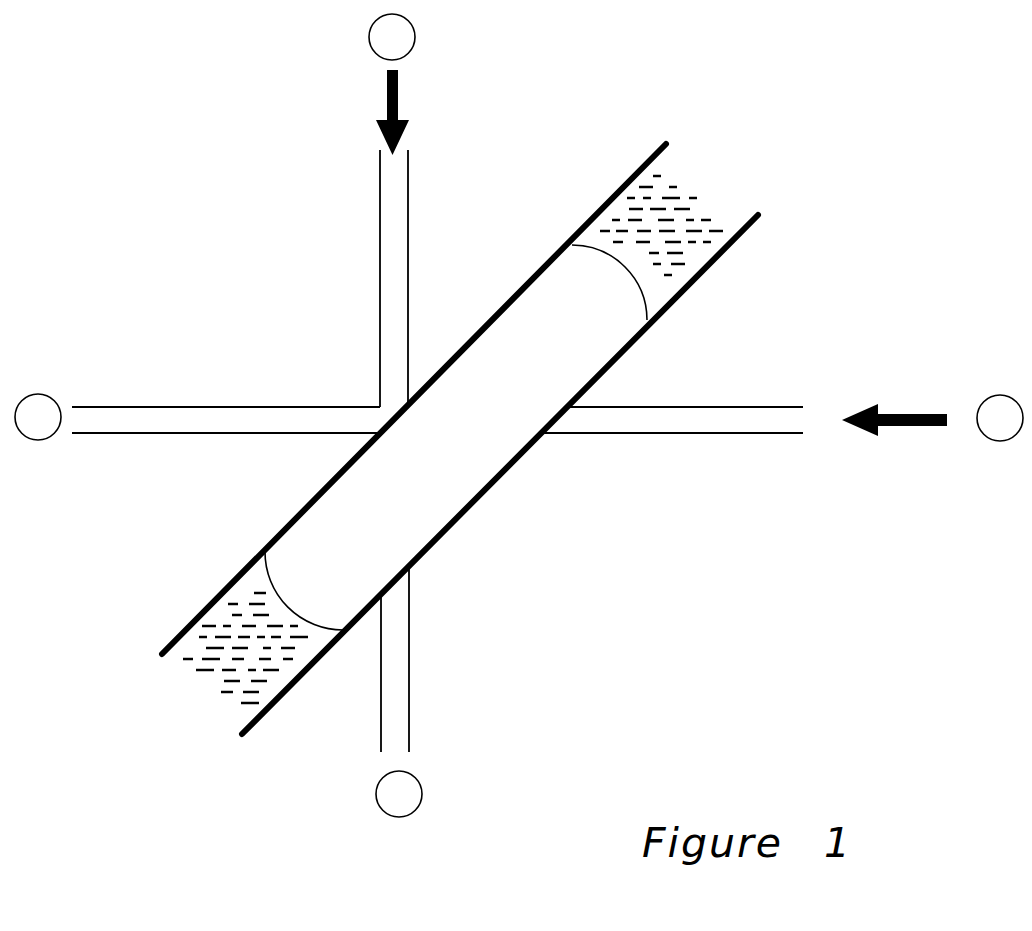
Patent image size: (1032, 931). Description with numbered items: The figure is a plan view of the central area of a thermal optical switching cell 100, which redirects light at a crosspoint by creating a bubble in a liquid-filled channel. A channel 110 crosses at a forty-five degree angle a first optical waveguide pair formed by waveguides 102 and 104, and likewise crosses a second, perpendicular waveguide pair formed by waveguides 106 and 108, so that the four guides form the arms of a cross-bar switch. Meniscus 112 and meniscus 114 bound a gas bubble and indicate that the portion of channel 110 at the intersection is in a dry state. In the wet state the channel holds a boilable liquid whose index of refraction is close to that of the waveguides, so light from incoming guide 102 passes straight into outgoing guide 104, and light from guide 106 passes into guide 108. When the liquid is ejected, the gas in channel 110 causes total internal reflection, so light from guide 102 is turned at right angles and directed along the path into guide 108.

The thermal optical switching cell 100 is at (931, 142).
The waveguide 102 is at (408, 257).
The waveguide 104 is at (412, 687).
The waveguide 106 is at (685, 406).
The waveguide 108 is at (262, 406).
The channel 110 is at (718, 161).
The meniscus 112 is at (622, 268).
The meniscus 114 is at (287, 603).